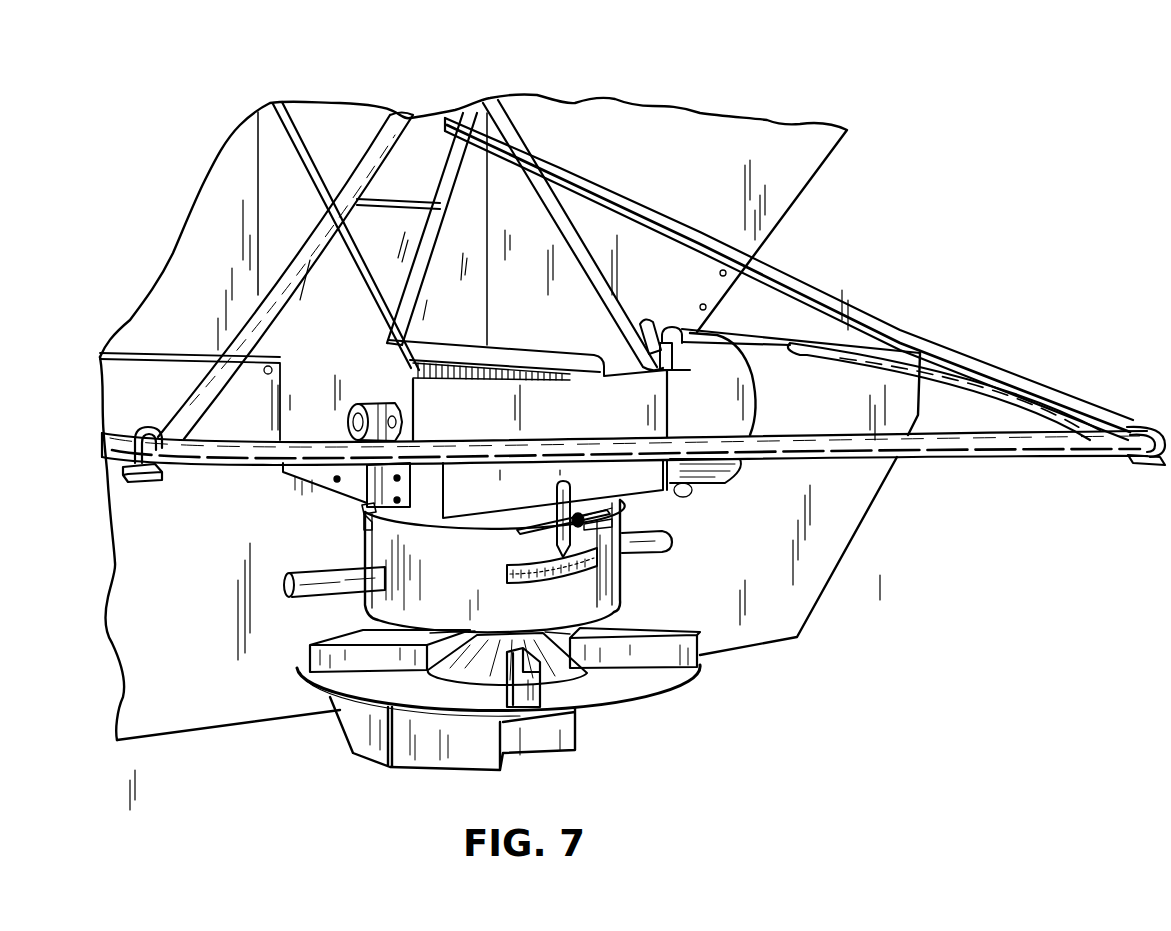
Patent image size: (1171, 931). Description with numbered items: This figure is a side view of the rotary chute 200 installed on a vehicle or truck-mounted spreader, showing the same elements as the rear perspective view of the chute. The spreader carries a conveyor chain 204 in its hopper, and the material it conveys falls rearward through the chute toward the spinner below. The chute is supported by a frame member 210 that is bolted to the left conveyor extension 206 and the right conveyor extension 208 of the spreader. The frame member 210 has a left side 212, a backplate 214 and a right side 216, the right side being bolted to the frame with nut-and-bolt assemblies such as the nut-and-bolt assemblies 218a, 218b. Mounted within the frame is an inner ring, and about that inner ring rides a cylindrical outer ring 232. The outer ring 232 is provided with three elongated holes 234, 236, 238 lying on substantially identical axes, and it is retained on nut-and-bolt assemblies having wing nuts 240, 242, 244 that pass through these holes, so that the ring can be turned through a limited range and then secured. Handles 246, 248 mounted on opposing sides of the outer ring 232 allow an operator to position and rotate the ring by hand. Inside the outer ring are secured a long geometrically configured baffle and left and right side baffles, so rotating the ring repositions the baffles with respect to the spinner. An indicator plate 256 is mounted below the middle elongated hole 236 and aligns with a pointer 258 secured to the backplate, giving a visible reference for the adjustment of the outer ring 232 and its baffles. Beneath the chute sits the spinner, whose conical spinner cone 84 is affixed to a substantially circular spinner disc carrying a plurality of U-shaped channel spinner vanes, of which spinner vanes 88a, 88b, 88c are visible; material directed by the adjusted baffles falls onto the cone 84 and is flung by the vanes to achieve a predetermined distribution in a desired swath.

The rotary chute 200 is at (844, 286).
The conveyor chain 204 is at (494, 367).
The left conveyor extension 206 is at (350, 349).
The right conveyor extension 208 is at (592, 343).
The frame member 210 is at (740, 386).
The left side 212 is at (430, 397).
The backplate 214 is at (632, 371).
The right side 216 is at (731, 348).
The nut-and-bolt assembly 218a is at (405, 432).
The nut-and-bolt assembly 218b is at (437, 474).
The cylindrical outer ring 232 is at (623, 582).
The elongated hole 234 is at (362, 511).
The middle elongated hole 236 is at (518, 530).
The elongated hole 238 is at (612, 509).
The wing nut 240 is at (366, 527).
The wing nut 242 is at (577, 516).
The wing nut 244 is at (612, 523).
The handle 246 is at (327, 597).
The handle 248 is at (670, 535).
The indicator plate 256 is at (551, 580).
The pointer 258 is at (553, 548).
The conical spinner cone 84 is at (467, 668).
The spinner vane 88a is at (310, 664).
The spinner vane 88b is at (530, 690).
The spinner vane 88c is at (678, 648).